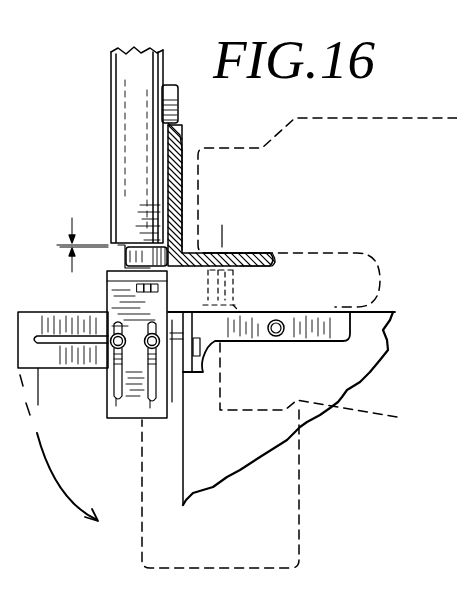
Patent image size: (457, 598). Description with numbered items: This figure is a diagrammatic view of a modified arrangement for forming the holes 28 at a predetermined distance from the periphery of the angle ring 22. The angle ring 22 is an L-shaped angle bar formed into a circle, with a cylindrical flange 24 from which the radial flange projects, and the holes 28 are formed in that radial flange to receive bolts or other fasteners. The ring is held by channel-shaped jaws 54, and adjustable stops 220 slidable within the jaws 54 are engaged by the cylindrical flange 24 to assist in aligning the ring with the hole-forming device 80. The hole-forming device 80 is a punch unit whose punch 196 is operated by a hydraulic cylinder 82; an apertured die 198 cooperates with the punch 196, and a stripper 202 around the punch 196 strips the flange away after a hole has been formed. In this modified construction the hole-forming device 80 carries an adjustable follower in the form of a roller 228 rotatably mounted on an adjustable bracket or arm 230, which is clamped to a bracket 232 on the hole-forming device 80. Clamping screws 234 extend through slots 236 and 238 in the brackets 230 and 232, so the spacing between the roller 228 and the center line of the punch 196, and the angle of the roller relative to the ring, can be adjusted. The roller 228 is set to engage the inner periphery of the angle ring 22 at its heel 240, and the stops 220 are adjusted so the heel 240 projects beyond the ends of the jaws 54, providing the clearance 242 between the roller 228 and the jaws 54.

The angle ring 22 is at (183, 140).
The cylindrical flange 24 is at (183, 168).
The holes 28 is at (222, 257).
The jaws 54 is at (120, 116).
The hole-forming device 80 is at (265, 133).
The hydraulic cylinder 82 is at (302, 507).
The punch 196 is at (237, 283).
The apertured die 198 is at (248, 258).
The stripper 202 is at (237, 294).
The adjustable stops 220 is at (177, 128).
The follower roller 228 is at (115, 258).
The adjustable bracket 230 is at (110, 292).
The bracket 232 is at (63, 416).
The clamping screws 234 is at (112, 347).
The slots 236 is at (117, 407).
The slots 238 is at (42, 336).
The heel 240 is at (152, 250).
The clearance 242 is at (68, 243).